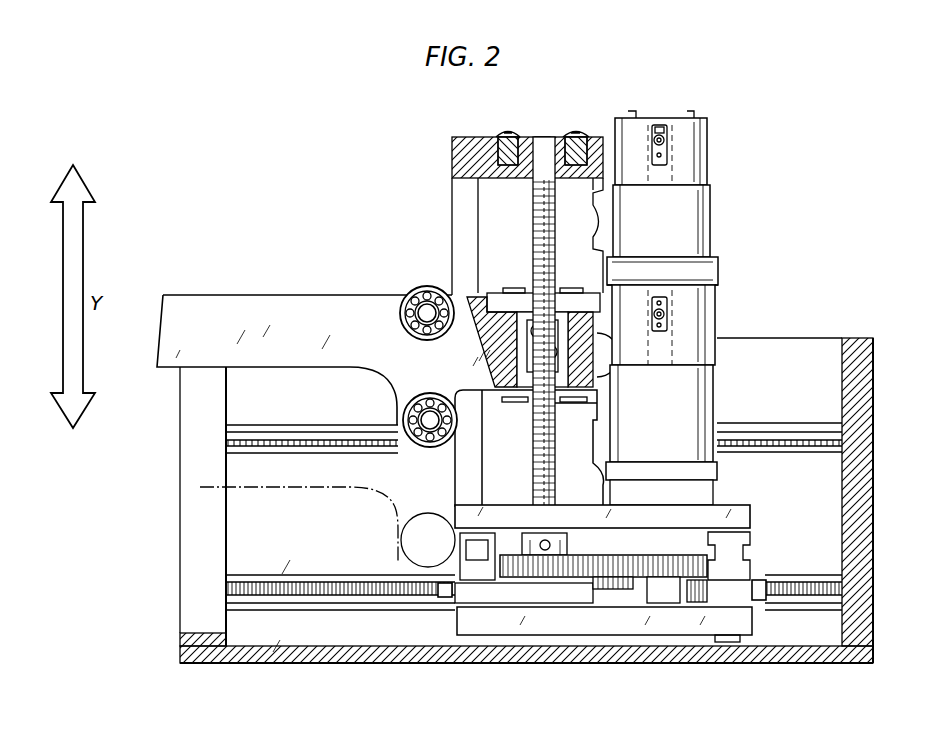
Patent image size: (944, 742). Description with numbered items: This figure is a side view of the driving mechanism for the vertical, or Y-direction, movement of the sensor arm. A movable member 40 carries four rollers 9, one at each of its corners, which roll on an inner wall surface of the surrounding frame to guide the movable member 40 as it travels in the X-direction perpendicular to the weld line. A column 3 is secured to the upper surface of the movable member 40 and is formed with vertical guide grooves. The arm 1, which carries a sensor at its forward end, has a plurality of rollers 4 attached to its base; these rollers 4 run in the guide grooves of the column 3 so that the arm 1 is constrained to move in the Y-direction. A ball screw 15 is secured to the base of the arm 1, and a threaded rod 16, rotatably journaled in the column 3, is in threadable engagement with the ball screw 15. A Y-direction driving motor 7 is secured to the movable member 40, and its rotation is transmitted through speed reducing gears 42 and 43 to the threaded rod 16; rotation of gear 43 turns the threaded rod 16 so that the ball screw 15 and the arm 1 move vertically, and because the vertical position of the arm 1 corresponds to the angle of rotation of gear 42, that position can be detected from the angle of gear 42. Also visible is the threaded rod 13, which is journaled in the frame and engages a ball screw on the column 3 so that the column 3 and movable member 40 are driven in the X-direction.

The arm 1 is at (250, 310).
The column 3 is at (456, 483).
The rollers 4 is at (423, 290).
The Y-direction driving motor 7 is at (703, 213).
The rollers 9 is at (434, 598).
The threaded rod 13 is at (782, 427).
The ball screw 15 is at (500, 292).
The threaded rod 16 is at (536, 204).
The movable member 40 is at (740, 508).
The speed reducing gear 42 is at (638, 578).
The speed reducing gear 43 is at (608, 580).